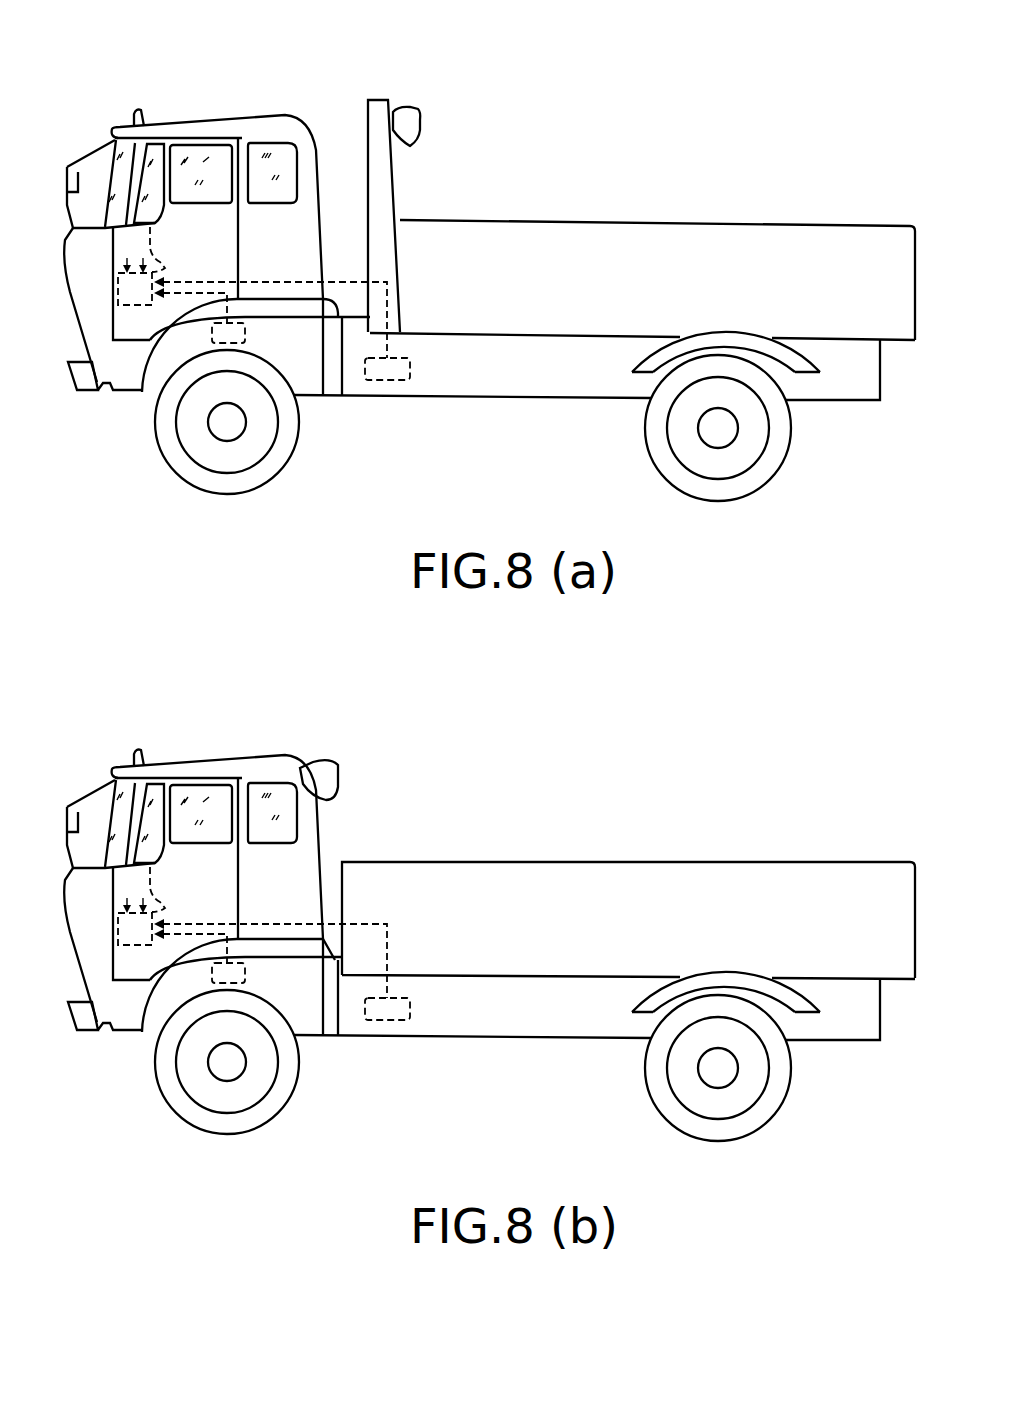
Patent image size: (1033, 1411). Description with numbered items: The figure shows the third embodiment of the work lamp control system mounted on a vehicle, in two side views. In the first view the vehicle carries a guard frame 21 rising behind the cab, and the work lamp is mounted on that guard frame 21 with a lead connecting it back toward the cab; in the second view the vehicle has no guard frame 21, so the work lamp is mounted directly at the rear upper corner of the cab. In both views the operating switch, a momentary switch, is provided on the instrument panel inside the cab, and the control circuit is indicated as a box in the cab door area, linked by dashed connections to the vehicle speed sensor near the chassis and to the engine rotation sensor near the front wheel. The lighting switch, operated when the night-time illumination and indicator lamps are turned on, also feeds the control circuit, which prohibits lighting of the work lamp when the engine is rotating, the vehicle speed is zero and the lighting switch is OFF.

The guard frame 21 is at (395, 180).